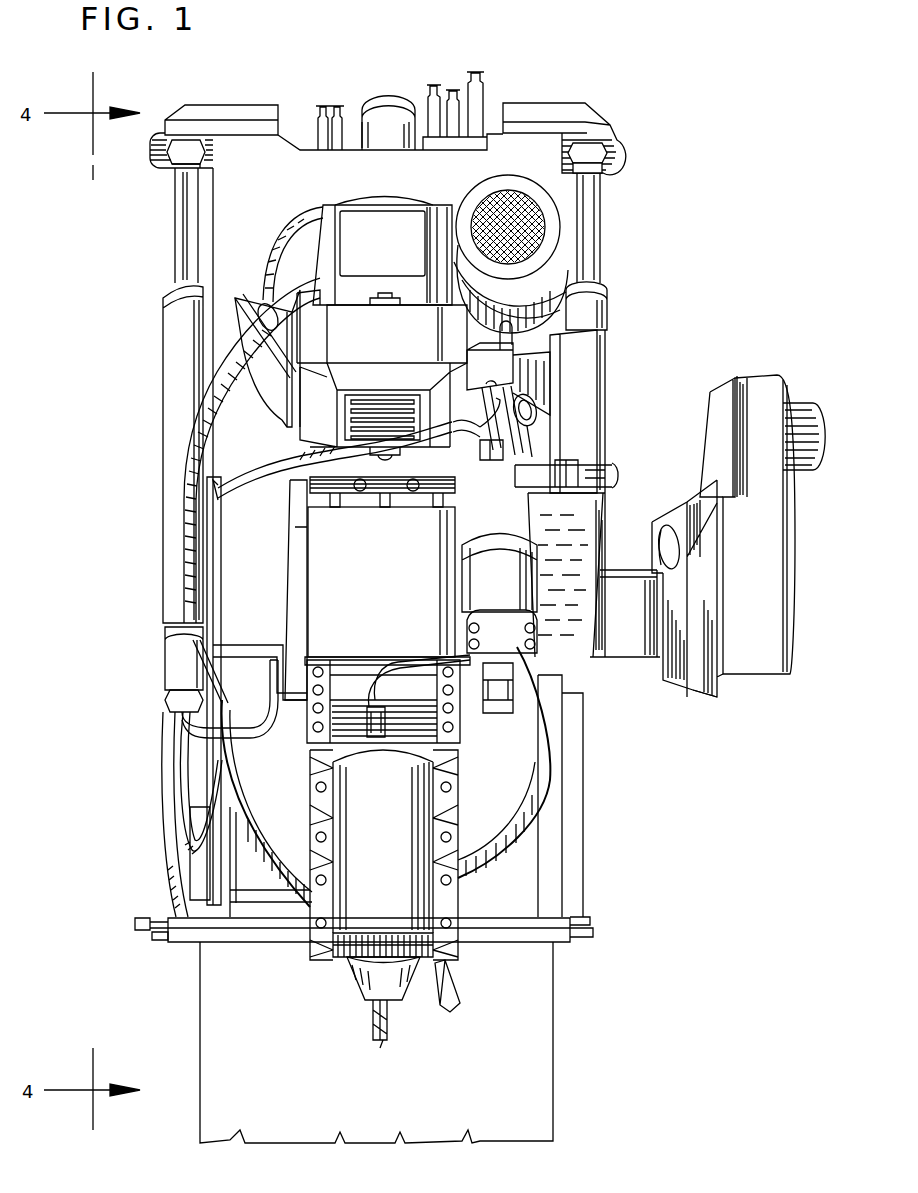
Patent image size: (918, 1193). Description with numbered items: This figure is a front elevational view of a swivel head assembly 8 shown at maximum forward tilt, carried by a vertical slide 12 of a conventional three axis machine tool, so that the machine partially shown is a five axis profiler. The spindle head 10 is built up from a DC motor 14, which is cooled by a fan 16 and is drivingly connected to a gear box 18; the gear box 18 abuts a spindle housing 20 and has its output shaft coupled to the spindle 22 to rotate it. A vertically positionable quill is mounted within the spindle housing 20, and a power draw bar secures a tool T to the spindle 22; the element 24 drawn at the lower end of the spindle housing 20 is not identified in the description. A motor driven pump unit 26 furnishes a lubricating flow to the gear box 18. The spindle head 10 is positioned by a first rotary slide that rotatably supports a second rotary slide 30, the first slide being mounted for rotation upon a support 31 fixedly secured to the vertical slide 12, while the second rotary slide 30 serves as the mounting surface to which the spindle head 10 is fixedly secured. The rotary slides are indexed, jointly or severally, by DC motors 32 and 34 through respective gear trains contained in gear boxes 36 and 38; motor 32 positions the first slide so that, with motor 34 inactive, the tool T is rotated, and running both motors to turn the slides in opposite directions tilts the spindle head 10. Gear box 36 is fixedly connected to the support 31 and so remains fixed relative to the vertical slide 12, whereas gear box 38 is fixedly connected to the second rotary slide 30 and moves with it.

The swivel head assembly 8 is at (698, 252).
The spindle head 10 is at (118, 705).
The vertical slide 12 is at (543, 167).
The DC motor 14 is at (395, 225).
The fan 16 is at (560, 232).
The gear box 18 is at (354, 565).
The spindle housing 20 is at (350, 785).
The spindle 22 is at (362, 984).
The chuck 24 is at (348, 960).
The motor driven pump unit 26 is at (488, 577).
The second rotary slide 30 is at (537, 738).
The support 31 is at (529, 870).
The DC motor 32 is at (798, 415).
The DC motor 34 is at (543, 364).
The gear box 36 is at (764, 645).
The gear box 38 is at (585, 395).
The tool T is at (381, 1040).